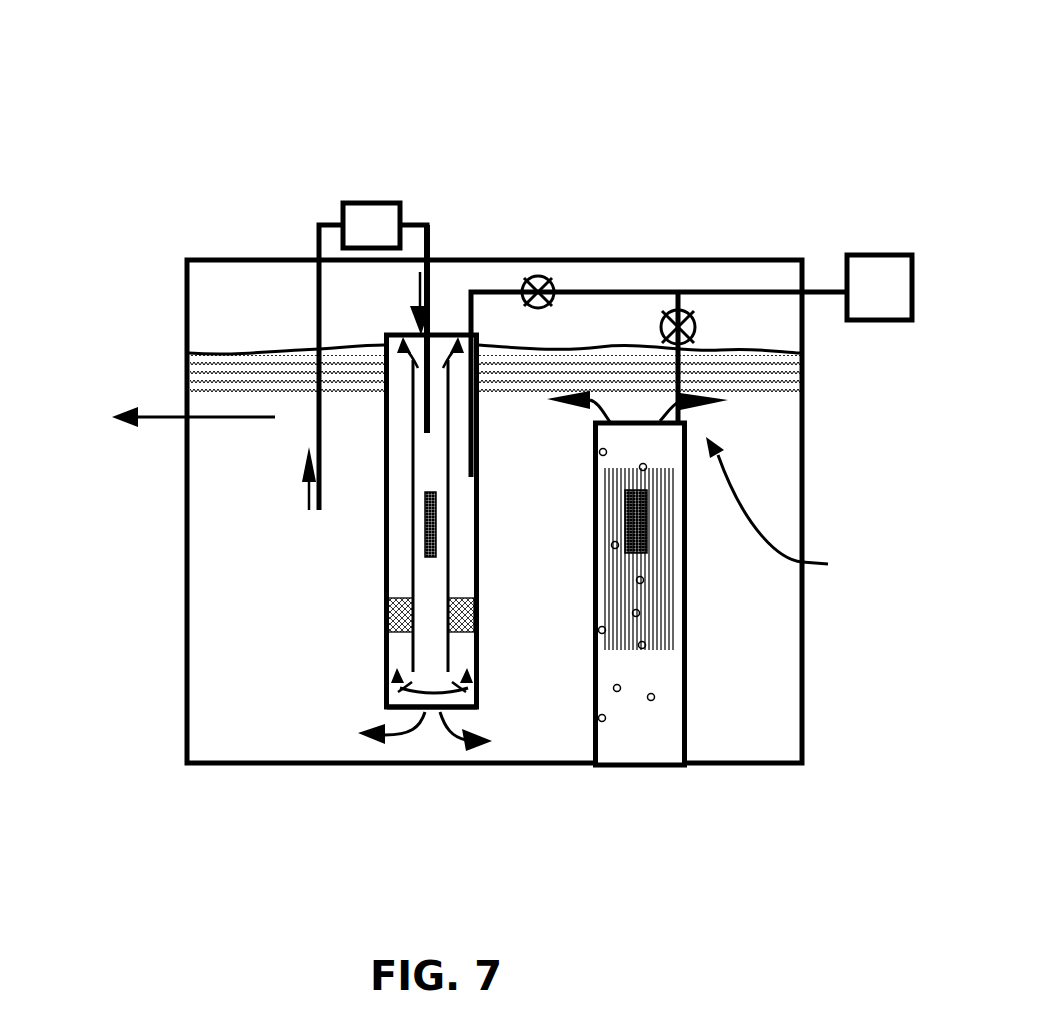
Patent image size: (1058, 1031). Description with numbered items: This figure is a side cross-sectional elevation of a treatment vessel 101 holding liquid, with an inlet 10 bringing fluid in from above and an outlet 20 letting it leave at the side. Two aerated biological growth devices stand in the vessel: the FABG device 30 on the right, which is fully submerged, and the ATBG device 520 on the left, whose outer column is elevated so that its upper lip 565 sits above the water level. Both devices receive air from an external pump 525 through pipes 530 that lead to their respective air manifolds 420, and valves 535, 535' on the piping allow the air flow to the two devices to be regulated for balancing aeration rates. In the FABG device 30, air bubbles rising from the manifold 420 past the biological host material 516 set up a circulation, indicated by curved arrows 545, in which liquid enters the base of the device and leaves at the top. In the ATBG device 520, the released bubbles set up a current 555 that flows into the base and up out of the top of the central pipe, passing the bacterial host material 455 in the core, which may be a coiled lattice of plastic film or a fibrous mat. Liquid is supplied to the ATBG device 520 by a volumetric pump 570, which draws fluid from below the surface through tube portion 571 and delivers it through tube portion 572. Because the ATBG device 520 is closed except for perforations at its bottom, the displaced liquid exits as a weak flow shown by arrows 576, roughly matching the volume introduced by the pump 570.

The vessel 101 is at (500, 143).
The inlet 10 is at (258, 290).
The outlet 20 is at (193, 447).
The FABG device 30 is at (796, 511).
The volumetric pump 570 is at (372, 203).
The tube portion 571 is at (310, 416).
The tube portion 572 is at (413, 443).
The upper lip 565 is at (443, 323).
The bacterial host material 455 is at (427, 560).
The ATBG device 520 is at (332, 612).
The current 555 is at (384, 693).
The flow out of the device 576 is at (397, 735).
The air manifold 420 is at (437, 713).
The pipes 530 is at (625, 290).
The valve 535 is at (709, 461).
The valve 535' is at (564, 238).
The external pump 525 is at (877, 253).
The biological host material 516 is at (663, 618).
The curved arrows 545 is at (700, 406).